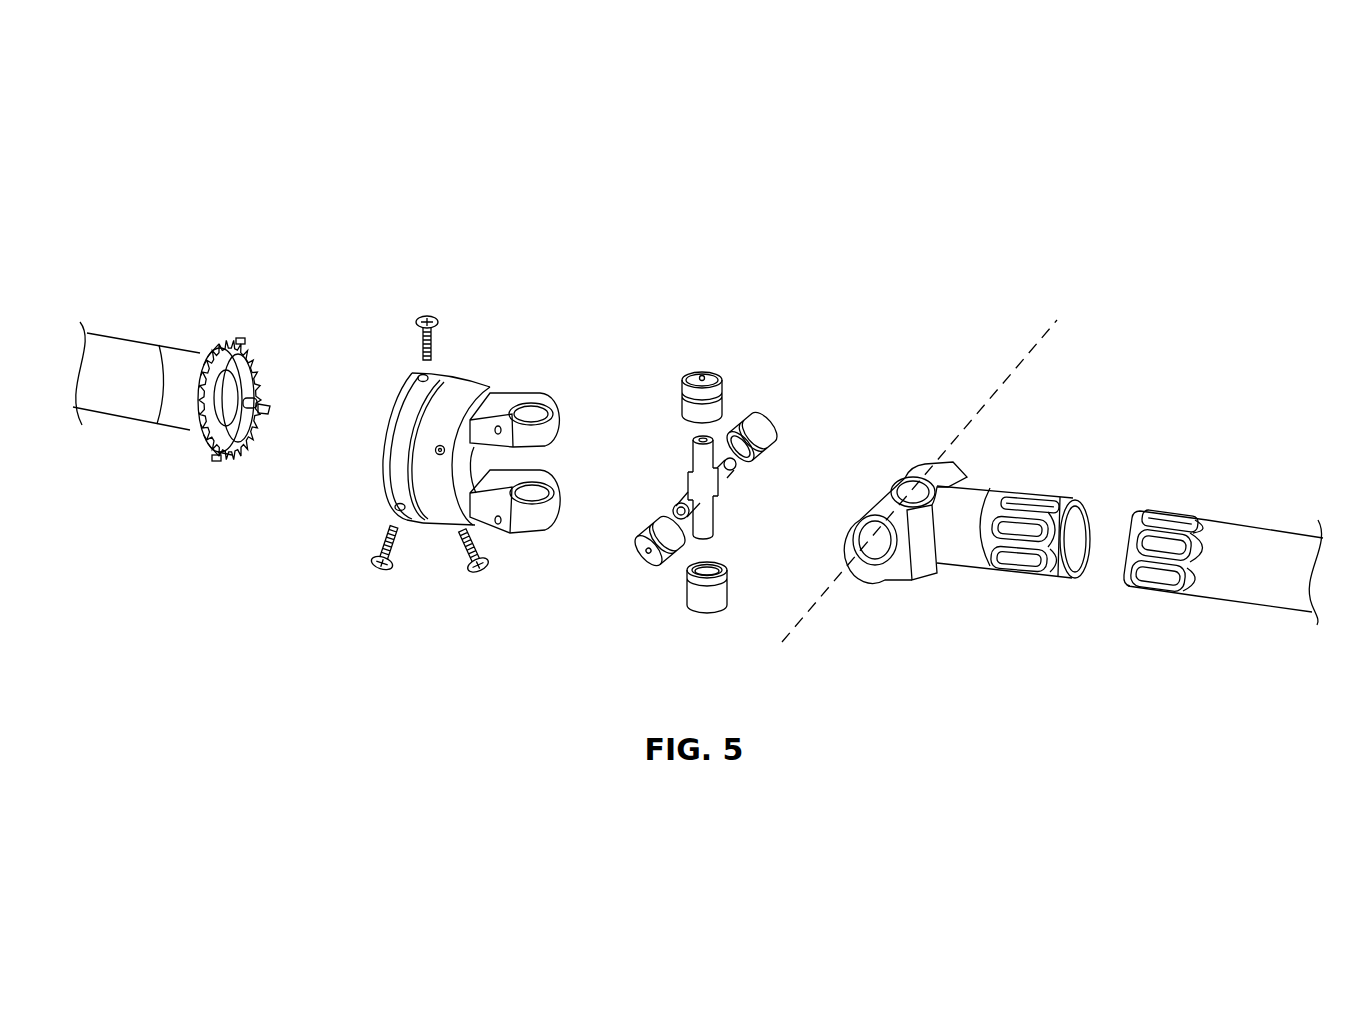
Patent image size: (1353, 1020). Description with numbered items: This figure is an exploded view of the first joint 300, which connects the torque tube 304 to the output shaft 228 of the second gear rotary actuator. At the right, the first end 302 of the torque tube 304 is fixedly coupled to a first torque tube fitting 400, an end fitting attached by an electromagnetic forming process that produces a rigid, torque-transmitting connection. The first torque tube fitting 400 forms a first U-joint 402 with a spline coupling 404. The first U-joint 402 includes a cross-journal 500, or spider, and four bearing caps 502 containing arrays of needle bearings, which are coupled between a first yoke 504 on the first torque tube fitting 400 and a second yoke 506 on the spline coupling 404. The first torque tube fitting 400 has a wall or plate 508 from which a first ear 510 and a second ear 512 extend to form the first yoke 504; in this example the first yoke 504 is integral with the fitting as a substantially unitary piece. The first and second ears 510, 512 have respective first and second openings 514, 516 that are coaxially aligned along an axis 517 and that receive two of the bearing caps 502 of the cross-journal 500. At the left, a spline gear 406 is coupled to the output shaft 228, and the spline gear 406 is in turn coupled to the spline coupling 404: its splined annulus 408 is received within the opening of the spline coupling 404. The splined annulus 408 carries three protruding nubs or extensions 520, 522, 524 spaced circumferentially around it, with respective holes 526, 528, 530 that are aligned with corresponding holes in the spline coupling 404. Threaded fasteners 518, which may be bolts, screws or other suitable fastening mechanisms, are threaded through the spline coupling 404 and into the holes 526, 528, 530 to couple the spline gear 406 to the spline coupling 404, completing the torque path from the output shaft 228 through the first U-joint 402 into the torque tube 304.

The first joint 300 is at (616, 154).
The output shaft 228 is at (118, 420).
The first end 302 is at (1135, 512).
The torque tube 304 is at (1220, 533).
The first torque tube fitting 400 is at (978, 497).
The first U-joint 402 is at (802, 363).
The spline coupling 404 is at (472, 383).
The spline gear 406 is at (193, 433).
The splined annulus 408 is at (212, 357).
The cross-journal 500 is at (684, 483).
The bearing caps 502 is at (690, 376).
The first yoke 504 is at (870, 495).
The second yoke 506 is at (558, 455).
The plate 508 is at (938, 567).
The first ear 510 is at (856, 530).
The second ear 512 is at (917, 467).
The first opening 514 is at (848, 543).
The second opening 516 is at (892, 478).
The axis 517 is at (1022, 362).
The threaded fasteners 518 is at (440, 327).
The extension 520 is at (253, 348).
The extension 522 is at (268, 404).
The extension 524 is at (218, 455).
The hole 526 is at (240, 336).
The hole 528 is at (272, 411).
The hole 530 is at (214, 462).